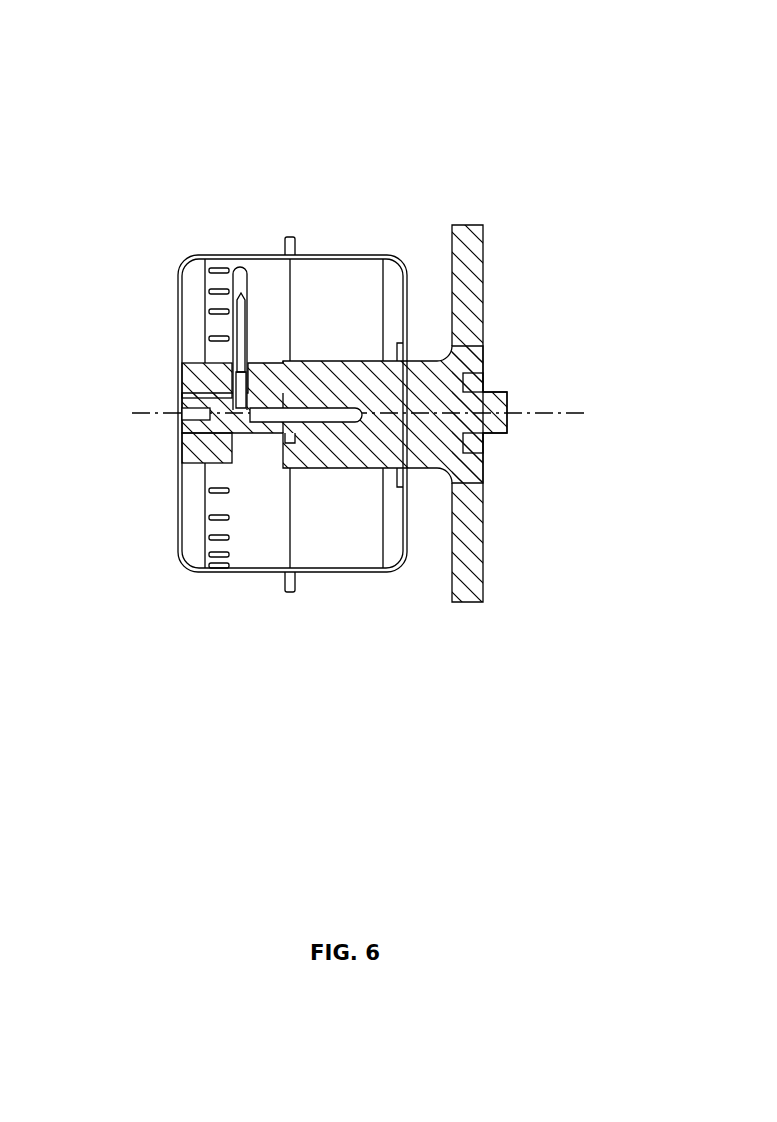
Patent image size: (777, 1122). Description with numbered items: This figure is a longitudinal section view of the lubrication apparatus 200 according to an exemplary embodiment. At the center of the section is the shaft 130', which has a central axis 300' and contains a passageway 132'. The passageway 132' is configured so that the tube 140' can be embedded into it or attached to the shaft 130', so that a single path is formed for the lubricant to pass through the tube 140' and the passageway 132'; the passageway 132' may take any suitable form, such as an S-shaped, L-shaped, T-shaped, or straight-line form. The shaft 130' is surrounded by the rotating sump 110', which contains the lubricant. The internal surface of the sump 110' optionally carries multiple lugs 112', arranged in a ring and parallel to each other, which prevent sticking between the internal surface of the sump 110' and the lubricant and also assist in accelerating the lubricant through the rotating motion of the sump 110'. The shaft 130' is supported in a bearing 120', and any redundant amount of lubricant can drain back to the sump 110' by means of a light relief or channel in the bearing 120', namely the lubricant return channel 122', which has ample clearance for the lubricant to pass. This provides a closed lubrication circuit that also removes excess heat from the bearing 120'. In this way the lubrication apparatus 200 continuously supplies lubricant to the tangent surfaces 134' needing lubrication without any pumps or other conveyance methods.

The lubrication apparatus 200 is at (579, 43).
The sump 110' is at (242, 399).
The lugs 112' is at (138, 442).
The bearing 120' is at (514, 413).
The lubricant return channel 122' is at (191, 475).
The shaft 130' is at (342, 390).
The passageway 132' is at (207, 381).
The tangent surfaces 134' is at (530, 404).
The tube 140' is at (153, 302).
The central axis 300' is at (383, 440).